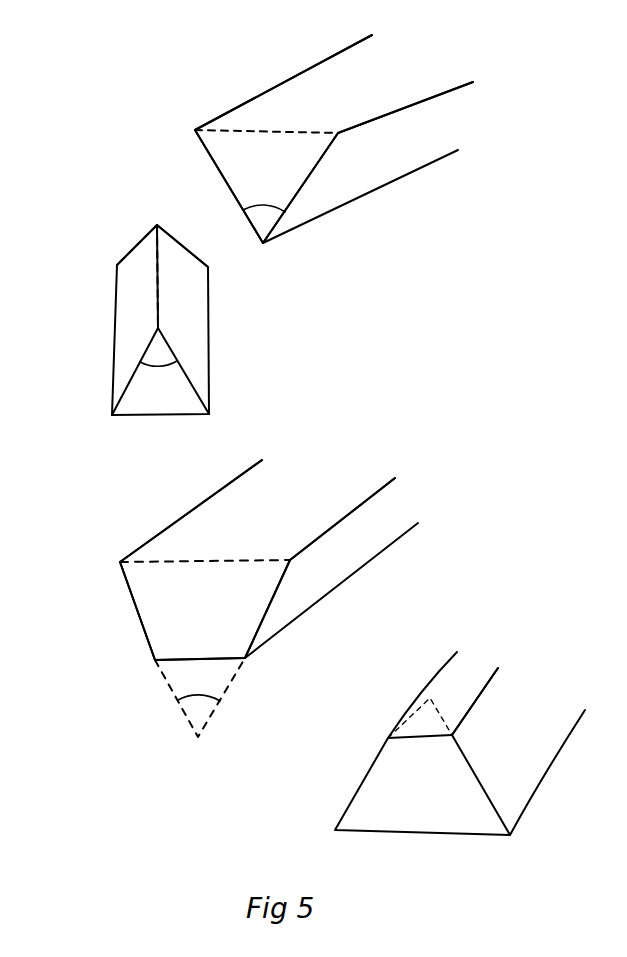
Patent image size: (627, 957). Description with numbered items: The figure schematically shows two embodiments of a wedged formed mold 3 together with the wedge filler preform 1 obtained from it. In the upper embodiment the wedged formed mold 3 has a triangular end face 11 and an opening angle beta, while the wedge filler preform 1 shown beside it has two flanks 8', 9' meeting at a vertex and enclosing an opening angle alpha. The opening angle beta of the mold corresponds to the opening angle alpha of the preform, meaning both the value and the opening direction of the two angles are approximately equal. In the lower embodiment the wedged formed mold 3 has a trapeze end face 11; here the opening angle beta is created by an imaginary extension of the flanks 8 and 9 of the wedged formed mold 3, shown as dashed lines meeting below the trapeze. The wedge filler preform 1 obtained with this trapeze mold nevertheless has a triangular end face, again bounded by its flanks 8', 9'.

The wedge filler preform 1 is at (91, 305).
The wedged formed mold 3 is at (487, 45).
The flank 8 is at (381, 324).
The flank 9 is at (246, 298).
The end face 11 is at (276, 181).
The flank 8' is at (337, 489).
The flank 9' is at (137, 276).